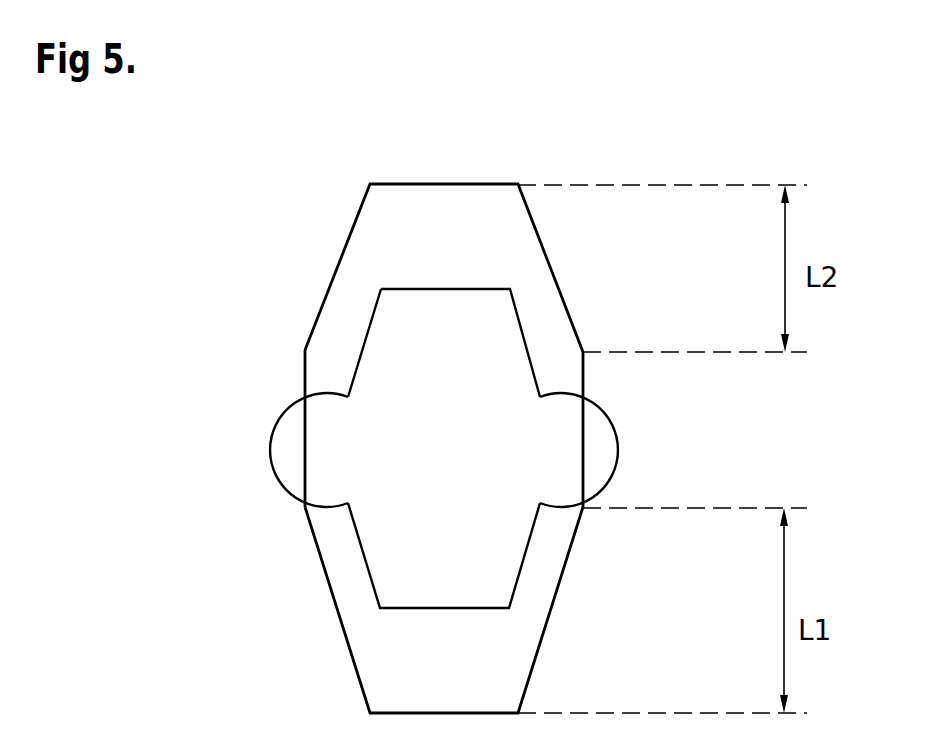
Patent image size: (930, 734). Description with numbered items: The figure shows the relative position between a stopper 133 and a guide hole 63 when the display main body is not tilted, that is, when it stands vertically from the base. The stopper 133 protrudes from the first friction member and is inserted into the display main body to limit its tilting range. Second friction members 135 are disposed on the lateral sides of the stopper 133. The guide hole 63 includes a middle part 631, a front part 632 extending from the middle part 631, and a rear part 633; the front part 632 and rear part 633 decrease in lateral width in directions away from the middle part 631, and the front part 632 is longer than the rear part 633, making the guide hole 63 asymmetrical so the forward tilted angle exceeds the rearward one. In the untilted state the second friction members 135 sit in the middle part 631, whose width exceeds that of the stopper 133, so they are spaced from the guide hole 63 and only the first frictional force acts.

The guide hole 63 is at (157, 272).
The rear part 633 is at (332, 283).
The middle part 631 is at (305, 468).
The front part 632 is at (343, 628).
The stopper 133 is at (492, 448).
The second friction member 135 is at (567, 444).